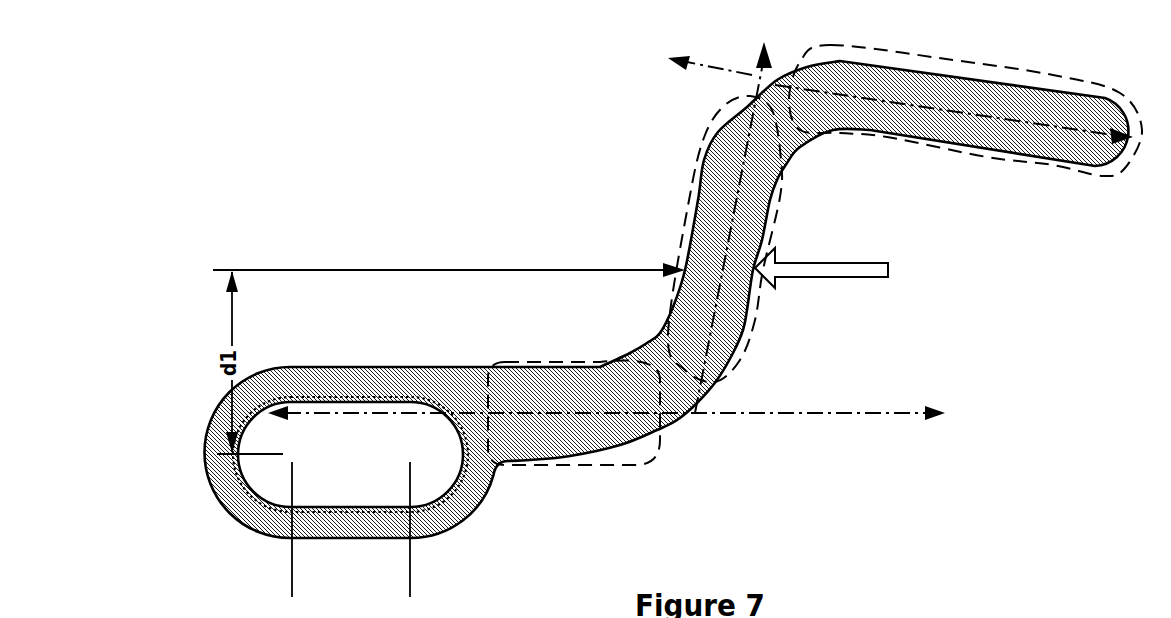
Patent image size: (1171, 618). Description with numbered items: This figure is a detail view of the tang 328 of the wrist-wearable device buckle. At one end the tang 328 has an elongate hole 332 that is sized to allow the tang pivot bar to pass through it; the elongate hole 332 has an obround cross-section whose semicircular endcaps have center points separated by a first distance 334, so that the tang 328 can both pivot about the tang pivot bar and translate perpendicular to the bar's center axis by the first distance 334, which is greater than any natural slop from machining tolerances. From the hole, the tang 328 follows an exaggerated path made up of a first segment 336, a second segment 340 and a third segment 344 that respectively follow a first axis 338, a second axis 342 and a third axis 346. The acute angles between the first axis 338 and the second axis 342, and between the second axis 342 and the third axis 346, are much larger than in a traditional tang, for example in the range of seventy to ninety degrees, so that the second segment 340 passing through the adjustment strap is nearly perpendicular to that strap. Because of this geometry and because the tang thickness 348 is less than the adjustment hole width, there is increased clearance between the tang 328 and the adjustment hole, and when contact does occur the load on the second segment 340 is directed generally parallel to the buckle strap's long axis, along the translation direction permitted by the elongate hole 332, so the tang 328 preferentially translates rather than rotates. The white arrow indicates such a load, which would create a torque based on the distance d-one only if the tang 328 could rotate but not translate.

The tang 328 is at (506, 118).
The elongate hole 332 is at (440, 500).
The first distance 334 is at (292, 580).
The first segment 336 is at (578, 466).
The first axis 338 is at (800, 420).
The second segment 340 is at (775, 213).
The second axis 342 is at (750, 90).
The third segment 344 is at (1055, 80).
The third axis 346 is at (918, 105).
The tang thickness 348 is at (770, 295).